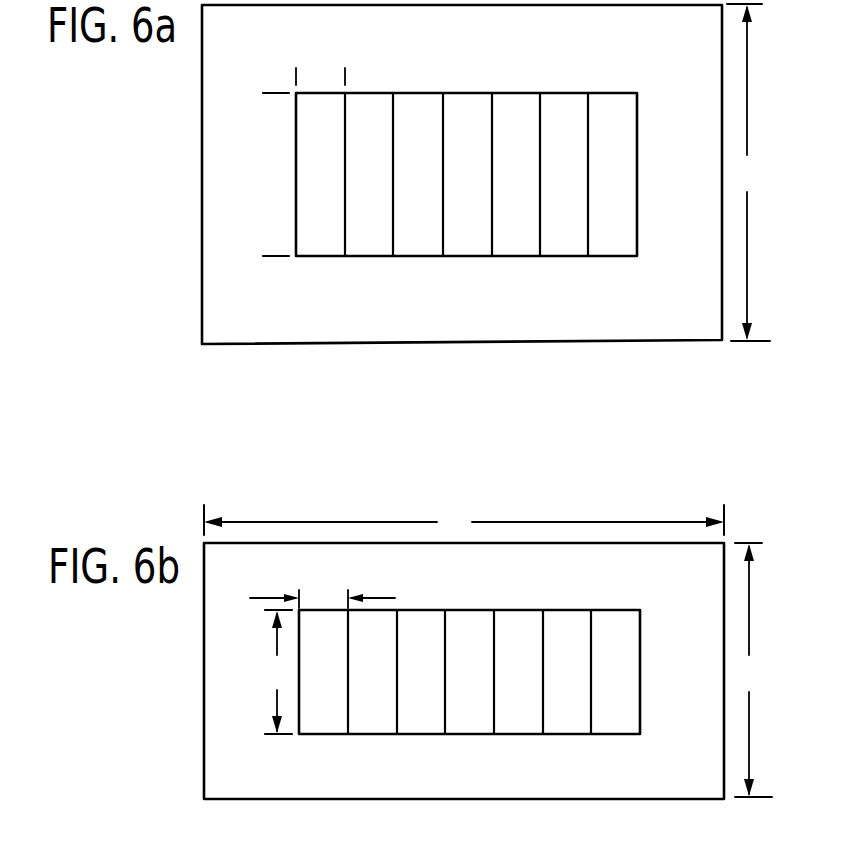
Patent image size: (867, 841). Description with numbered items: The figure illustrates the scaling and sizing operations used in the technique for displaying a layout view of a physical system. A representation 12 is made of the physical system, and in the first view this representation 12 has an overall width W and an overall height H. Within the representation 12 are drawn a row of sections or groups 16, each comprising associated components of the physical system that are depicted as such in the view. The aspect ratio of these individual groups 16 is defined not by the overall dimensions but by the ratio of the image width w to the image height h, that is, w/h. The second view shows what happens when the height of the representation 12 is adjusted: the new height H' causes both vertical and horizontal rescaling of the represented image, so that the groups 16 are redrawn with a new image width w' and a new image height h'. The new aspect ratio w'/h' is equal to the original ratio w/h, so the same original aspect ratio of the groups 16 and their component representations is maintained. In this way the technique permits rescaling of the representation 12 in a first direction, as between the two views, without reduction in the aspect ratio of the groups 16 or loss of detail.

In FIG. 6A, the representation 12 is at (188, 269).
In FIG. 6B, the representation 12 is at (188, 746).
In FIG. 6A, the sections or groups 16 is at (374, 247).
In FIG. 6B, the sections or groups 16 is at (378, 727).
In FIG. 6A, the image width w is at (320, 77).
In FIG. 6A, the image height h is at (276, 174).
In FIG. 6A, the height H is at (748, 172).
In FIG. 6B, the width W is at (464, 521).
In FIG. 6B, the new image width w' is at (334, 598).
In FIG. 6B, the new image height h' is at (278, 672).
In FIG. 6B, the new height H' is at (753, 670).